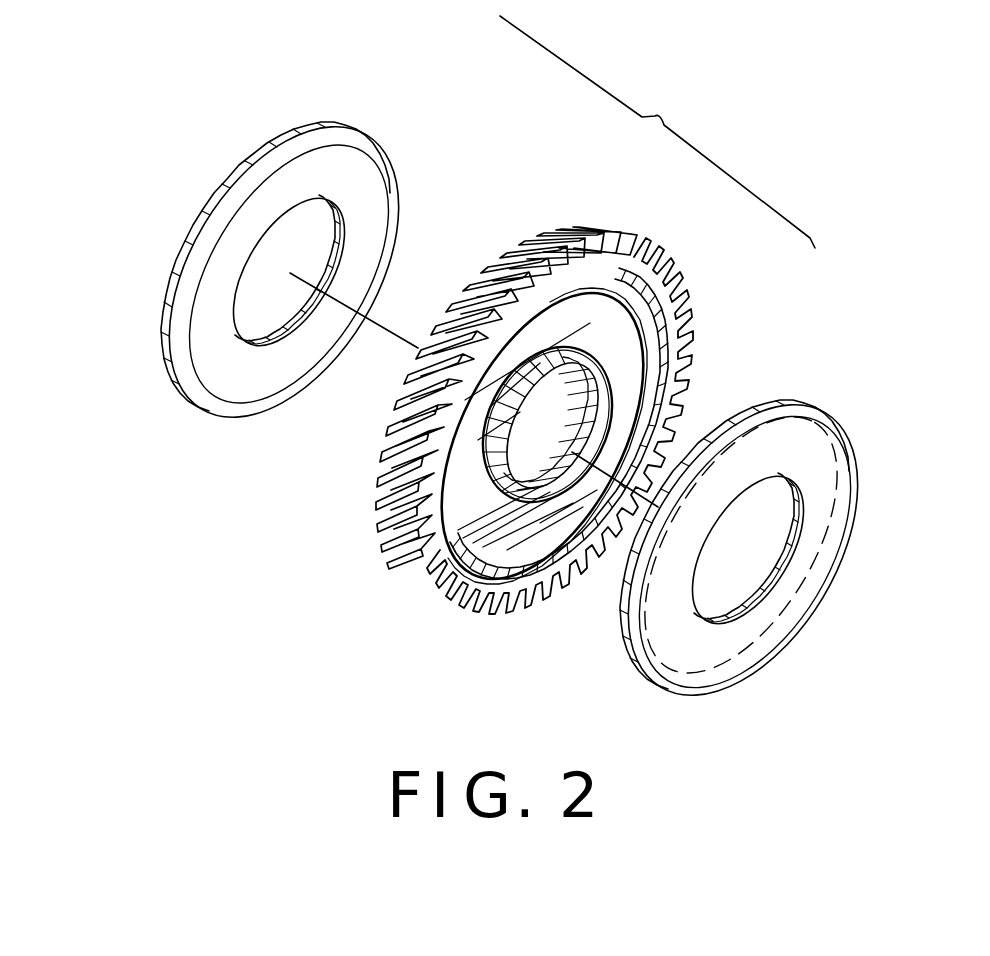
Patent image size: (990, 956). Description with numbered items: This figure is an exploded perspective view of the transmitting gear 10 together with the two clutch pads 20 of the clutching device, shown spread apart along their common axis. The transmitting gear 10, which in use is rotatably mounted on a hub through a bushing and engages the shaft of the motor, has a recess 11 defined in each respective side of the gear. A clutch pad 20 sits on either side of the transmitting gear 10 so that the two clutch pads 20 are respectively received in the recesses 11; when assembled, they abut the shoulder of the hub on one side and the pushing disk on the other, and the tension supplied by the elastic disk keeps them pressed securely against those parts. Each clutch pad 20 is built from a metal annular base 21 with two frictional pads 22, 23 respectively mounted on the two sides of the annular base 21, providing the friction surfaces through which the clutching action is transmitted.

The transmitting gear 10 is at (564, 393).
The recess 11 is at (677, 322).
The clutch pad 20 is at (250, 417).
The metal annular base 21 is at (843, 557).
The frictional pad 22 is at (835, 495).
The frictional pad 23 is at (743, 400).